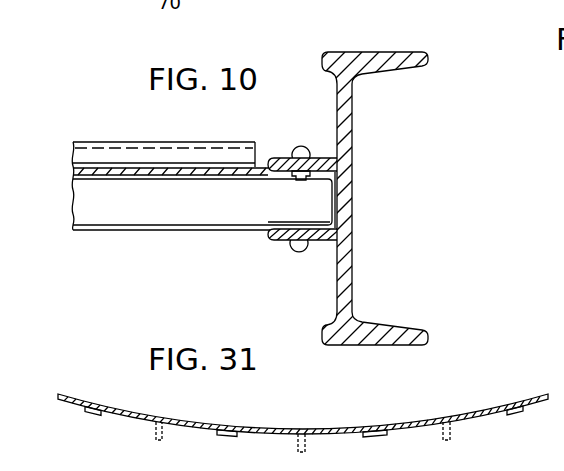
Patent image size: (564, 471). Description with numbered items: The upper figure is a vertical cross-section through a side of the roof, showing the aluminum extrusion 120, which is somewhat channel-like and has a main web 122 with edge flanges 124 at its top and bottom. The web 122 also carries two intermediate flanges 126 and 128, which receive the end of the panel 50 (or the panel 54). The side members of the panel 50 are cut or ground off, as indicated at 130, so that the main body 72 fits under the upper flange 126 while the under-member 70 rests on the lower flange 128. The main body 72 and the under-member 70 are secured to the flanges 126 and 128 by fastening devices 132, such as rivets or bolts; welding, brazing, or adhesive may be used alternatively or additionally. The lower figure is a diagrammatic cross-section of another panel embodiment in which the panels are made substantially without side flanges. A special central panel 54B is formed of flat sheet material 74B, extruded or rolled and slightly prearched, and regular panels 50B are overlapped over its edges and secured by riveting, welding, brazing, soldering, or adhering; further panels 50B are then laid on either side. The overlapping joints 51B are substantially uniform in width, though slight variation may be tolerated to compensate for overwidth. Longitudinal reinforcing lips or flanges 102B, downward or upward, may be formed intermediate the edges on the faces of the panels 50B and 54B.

In FIG. 10, the panel 50 is at (112, 217).
In FIG. 10, the panel 54 is at (268, 217).
In FIG. 10, the under-member 70 is at (215, 222).
In FIG. 10, the main body 72 is at (268, 179).
In FIG. 10, the extrusion 120 is at (395, 184).
In FIG. 10, the main web 122 is at (350, 281).
In FIG. 10, the edge flanges 124 is at (360, 52).
In FIG. 10, the intermediate flange 126 is at (321, 160).
In FIG. 10, the intermediate flange 128 is at (318, 236).
In FIG. 10, the cut-off side member region 130 is at (256, 163).
In FIG. 10, the fastening devices 132 is at (295, 150).
In FIG. 31, the regular panels 50B is at (88, 394).
In FIG. 31, the overlapping joints 51B is at (99, 396).
In FIG. 31, the special central panel 54B is at (302, 416).
In FIG. 31, the flat sheet material 74B is at (311, 428).
In FIG. 31, the longitudinal reinforcing lips or flanges 102B is at (300, 449).